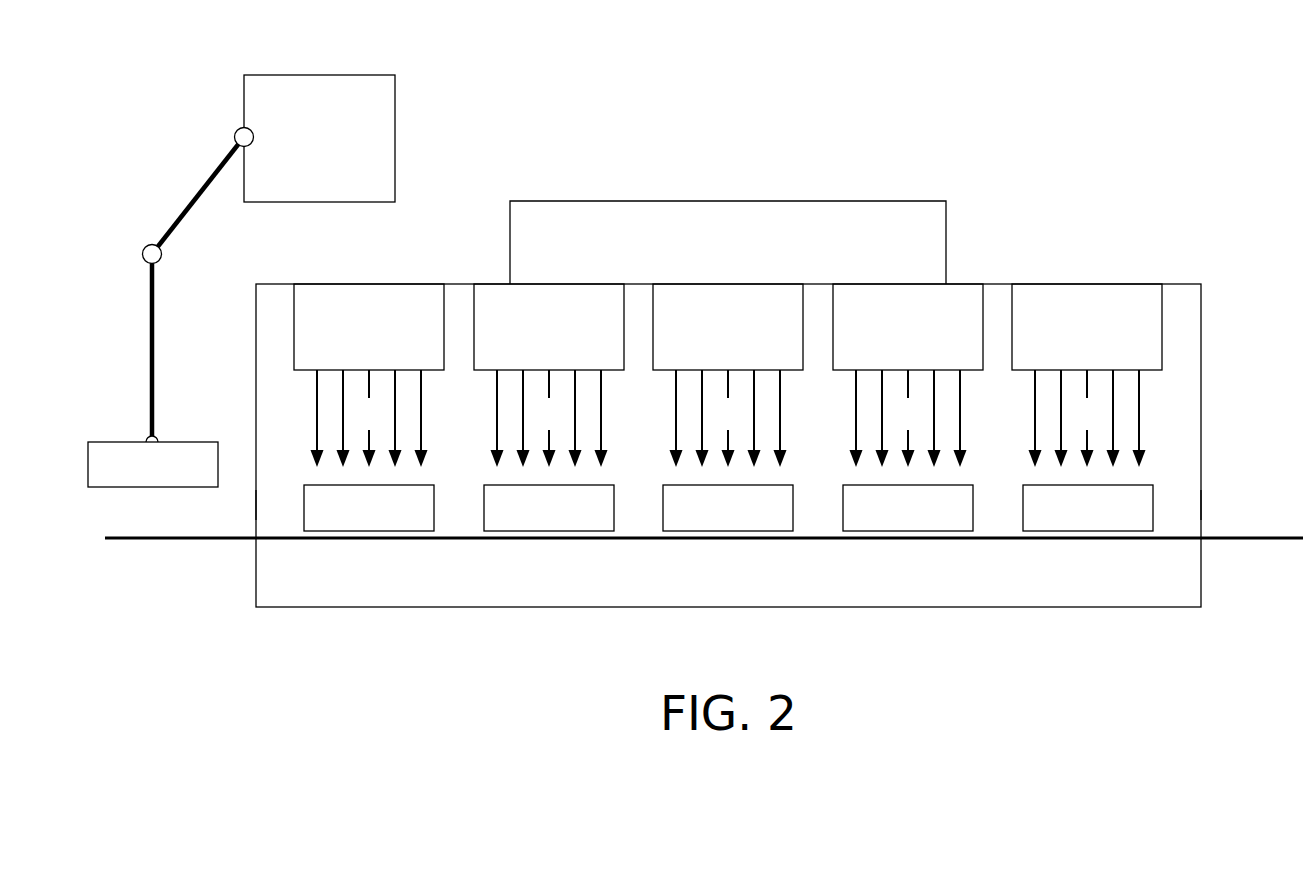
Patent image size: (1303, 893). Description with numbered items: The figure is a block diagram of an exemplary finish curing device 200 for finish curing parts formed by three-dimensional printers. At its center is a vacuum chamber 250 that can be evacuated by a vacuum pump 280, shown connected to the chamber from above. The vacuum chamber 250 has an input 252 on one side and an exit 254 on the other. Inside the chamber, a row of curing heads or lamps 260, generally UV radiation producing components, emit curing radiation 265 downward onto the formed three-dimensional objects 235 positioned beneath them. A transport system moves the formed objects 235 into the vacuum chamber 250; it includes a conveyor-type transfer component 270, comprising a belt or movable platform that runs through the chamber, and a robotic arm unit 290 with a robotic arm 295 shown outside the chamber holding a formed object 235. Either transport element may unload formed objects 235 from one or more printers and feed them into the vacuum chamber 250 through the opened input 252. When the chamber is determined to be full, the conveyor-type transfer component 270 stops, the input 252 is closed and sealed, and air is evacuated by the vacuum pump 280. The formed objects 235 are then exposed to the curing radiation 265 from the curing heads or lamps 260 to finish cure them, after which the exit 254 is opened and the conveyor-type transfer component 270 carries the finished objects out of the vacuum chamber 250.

The finish curing device 200 is at (900, 98).
The formed 3D objects 235 is at (152, 488).
The vacuum chamber 250 is at (728, 607).
The input 252 is at (256, 505).
The exit 254 is at (1202, 502).
The curing heads or lamps 260 is at (369, 284).
The curing radiation 265 is at (728, 418).
The conveyor-type transfer component 270 is at (183, 548).
The vacuum pump 280 is at (728, 201).
The robotic arm unit 290 is at (395, 128).
The robotic arm 295 is at (143, 299).